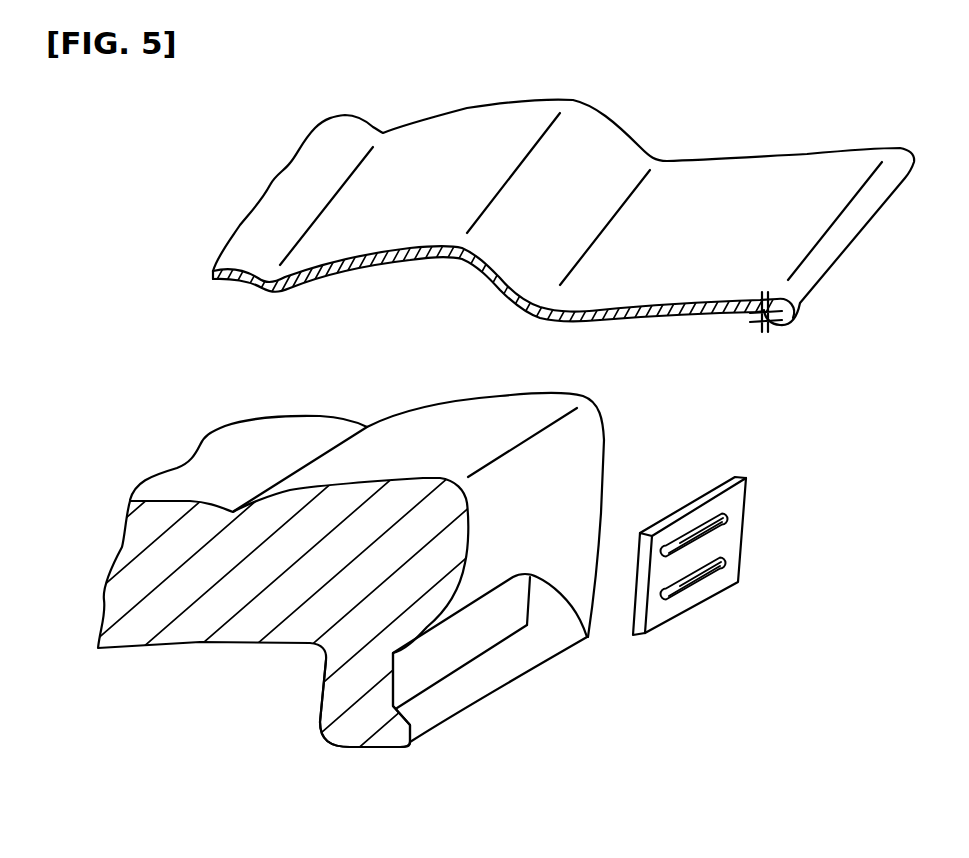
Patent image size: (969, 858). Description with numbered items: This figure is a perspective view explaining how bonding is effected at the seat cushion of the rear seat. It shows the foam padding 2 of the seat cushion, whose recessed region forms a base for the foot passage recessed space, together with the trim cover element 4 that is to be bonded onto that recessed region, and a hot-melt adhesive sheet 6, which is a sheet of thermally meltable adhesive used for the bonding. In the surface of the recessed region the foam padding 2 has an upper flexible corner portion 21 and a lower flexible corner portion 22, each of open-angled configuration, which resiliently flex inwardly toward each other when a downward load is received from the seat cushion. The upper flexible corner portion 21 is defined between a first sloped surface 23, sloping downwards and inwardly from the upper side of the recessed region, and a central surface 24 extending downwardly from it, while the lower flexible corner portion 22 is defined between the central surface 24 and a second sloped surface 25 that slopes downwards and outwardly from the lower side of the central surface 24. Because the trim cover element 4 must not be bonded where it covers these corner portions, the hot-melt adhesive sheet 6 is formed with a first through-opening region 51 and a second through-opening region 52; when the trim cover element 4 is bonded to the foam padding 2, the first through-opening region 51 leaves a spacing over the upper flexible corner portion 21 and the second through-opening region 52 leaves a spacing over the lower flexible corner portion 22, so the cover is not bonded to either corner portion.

The foam padding 2 is at (242, 643).
The trim cover element 4 is at (703, 177).
The hot-melt adhesive sheet 6 is at (734, 537).
The upper flexible corner portion 21 is at (393, 653).
The lower flexible corner portion 22 is at (395, 711).
The first sloped surface 23 is at (487, 580).
The central surface 24 is at (488, 620).
The second sloped surface 25 is at (460, 693).
The first through-opening region 51 is at (730, 515).
The second through-opening region 52 is at (715, 573).